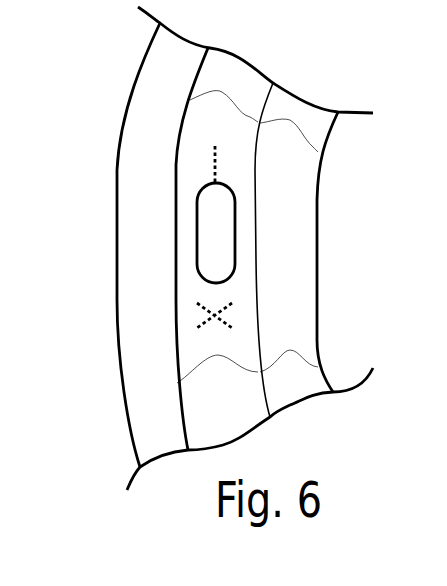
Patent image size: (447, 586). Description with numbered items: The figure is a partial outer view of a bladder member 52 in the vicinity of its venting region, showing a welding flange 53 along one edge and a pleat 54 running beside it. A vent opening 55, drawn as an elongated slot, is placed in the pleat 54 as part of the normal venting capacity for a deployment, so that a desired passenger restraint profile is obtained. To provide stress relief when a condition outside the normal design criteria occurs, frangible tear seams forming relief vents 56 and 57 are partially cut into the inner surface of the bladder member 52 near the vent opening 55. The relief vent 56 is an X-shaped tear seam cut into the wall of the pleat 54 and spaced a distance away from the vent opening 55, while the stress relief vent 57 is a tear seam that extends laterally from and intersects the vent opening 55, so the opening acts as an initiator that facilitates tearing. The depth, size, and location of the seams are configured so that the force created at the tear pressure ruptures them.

The bladder member 52 is at (110, 283).
The welding flange 53 is at (147, 148).
The pleat 54 is at (213, 80).
The vent opening 55 is at (226, 236).
The relief vent 56 is at (227, 323).
The stress relief vent 57 is at (216, 160).